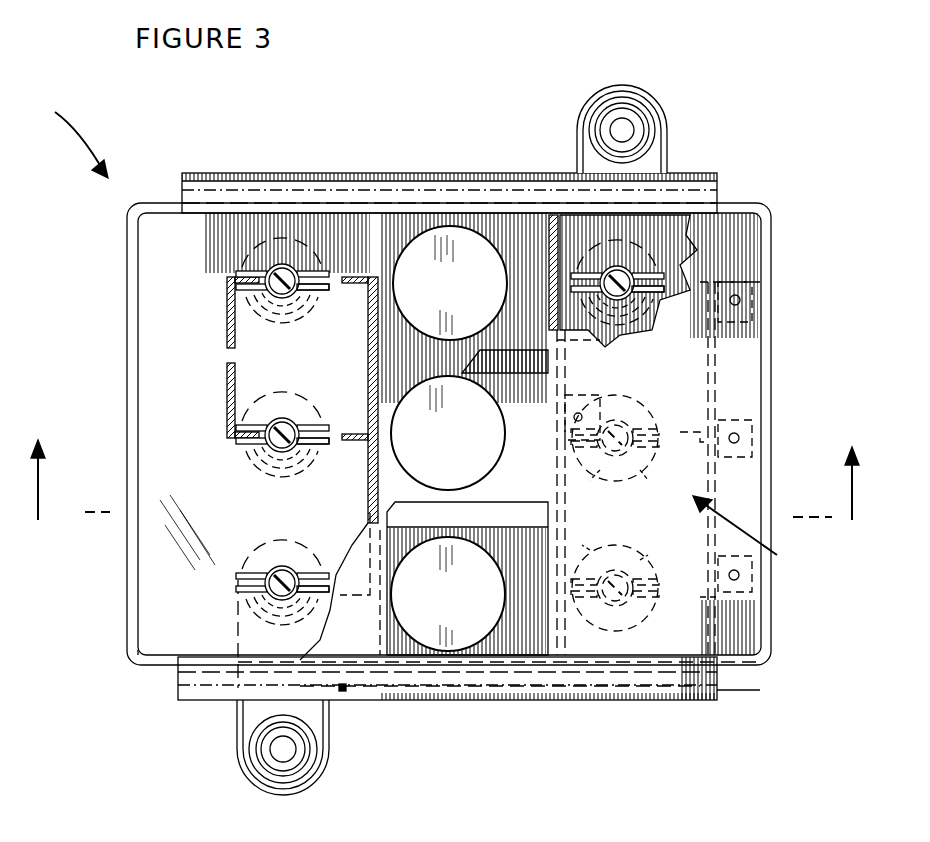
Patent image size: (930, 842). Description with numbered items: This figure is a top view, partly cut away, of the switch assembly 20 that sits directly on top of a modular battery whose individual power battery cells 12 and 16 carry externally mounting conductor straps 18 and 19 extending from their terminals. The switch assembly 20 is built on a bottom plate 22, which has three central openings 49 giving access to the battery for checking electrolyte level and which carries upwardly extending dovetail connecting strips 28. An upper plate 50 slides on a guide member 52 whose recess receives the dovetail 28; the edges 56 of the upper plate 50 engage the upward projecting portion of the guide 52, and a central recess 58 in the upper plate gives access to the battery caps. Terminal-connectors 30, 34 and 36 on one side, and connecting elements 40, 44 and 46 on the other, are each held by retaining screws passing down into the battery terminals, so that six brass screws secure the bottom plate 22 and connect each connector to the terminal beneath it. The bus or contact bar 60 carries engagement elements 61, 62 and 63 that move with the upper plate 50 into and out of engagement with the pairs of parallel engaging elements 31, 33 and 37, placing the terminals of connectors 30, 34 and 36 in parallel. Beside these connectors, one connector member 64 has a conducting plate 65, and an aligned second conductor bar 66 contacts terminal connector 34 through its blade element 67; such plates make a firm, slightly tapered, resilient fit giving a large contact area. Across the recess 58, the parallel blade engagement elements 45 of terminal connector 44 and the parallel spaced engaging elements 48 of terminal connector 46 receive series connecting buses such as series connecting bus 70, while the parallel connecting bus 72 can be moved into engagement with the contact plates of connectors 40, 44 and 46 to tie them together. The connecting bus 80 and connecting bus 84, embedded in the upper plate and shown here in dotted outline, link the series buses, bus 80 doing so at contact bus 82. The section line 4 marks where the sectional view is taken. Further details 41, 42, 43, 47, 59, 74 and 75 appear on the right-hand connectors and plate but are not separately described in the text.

The switch assembly 20 is at (65, 137).
The power battery cell 12 is at (198, 172).
The externally mounting conductor strap 19 is at (590, 94).
The guide member 52 is at (712, 173).
The central recess 58 is at (550, 213).
The bottom plate 22 is at (138, 288).
The conducting plate 65 is at (238, 277).
The terminal-connector 30 is at (290, 269).
The engagement element 61 is at (368, 277).
The terminal plate 42 is at (590, 277).
The terminal connector 40 is at (606, 270).
The terminal clamp 41 is at (664, 285).
The connector member 64 is at (227, 302).
The parallel engaging elements 31 is at (294, 300).
The capacitor support shelf 59 is at (553, 342).
The contact bar 60 is at (378, 350).
The connecting bus 80 is at (592, 355).
The second conductor bar 66 is at (227, 395).
The terminal-connector element 34 is at (282, 418).
The engagement element 62 is at (350, 432).
The terminal connector 44 is at (625, 420).
The bracket tab 74 is at (690, 430).
The parallel connecting bus 72 is at (752, 380).
The blade element 67 is at (240, 445).
The parallel engaging elements 33 is at (302, 455).
The contact bus 82 is at (574, 417).
The parallel blade engagement elements 45 is at (597, 470).
The terminal clamp 43 is at (640, 470).
The terminal-connector 36 is at (282, 566).
The parallel spaced engaging elements 48 is at (598, 556).
The terminal connector 46 is at (620, 550).
The terminal clamp 47 is at (645, 568).
The series connecting bus 70 is at (556, 560).
The upper plate 50 is at (750, 533).
The parallel engaging elements 37 is at (306, 600).
The engagement element 63 is at (360, 598).
The bracket tab 75 is at (705, 598).
The power battery cell 16 is at (150, 665).
The edges 56 is at (346, 692).
The connecting bus 84 is at (523, 690).
The dovetail connecting strips 28 is at (626, 690).
The externally mounting conductor strap 18 is at (325, 768).
The central openings 49 is at (466, 295).
The section line 4- 4 is at (445, 500).